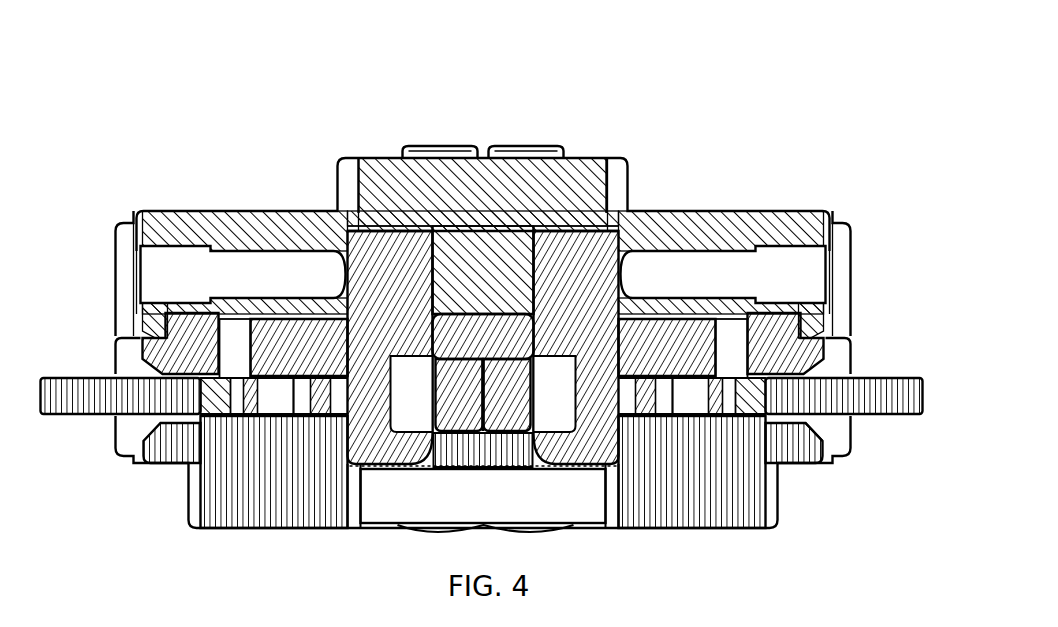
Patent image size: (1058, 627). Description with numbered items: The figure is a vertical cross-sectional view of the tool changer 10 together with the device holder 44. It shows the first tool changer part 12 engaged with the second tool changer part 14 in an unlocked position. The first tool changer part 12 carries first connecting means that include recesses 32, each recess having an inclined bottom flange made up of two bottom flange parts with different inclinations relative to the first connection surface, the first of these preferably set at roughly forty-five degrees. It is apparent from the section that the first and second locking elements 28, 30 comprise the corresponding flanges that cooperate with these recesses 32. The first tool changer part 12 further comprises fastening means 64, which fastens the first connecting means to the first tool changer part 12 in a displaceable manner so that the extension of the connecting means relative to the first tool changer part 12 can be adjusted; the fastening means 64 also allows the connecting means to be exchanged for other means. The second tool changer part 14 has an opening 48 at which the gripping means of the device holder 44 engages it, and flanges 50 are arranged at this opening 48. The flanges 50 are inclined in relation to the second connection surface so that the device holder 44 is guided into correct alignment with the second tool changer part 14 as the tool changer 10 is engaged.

The tool changer 10 is at (141, 166).
The first tool changer part 12 is at (374, 190).
The second tool changer part 14 is at (215, 490).
The first locking element 28 is at (510, 390).
The second locking element 30 is at (458, 388).
The recesses 32 is at (568, 393).
The device holder 44 is at (882, 397).
The opening 48 is at (820, 418).
The flanges 50 is at (823, 366).
The fastening means 64 is at (712, 265).